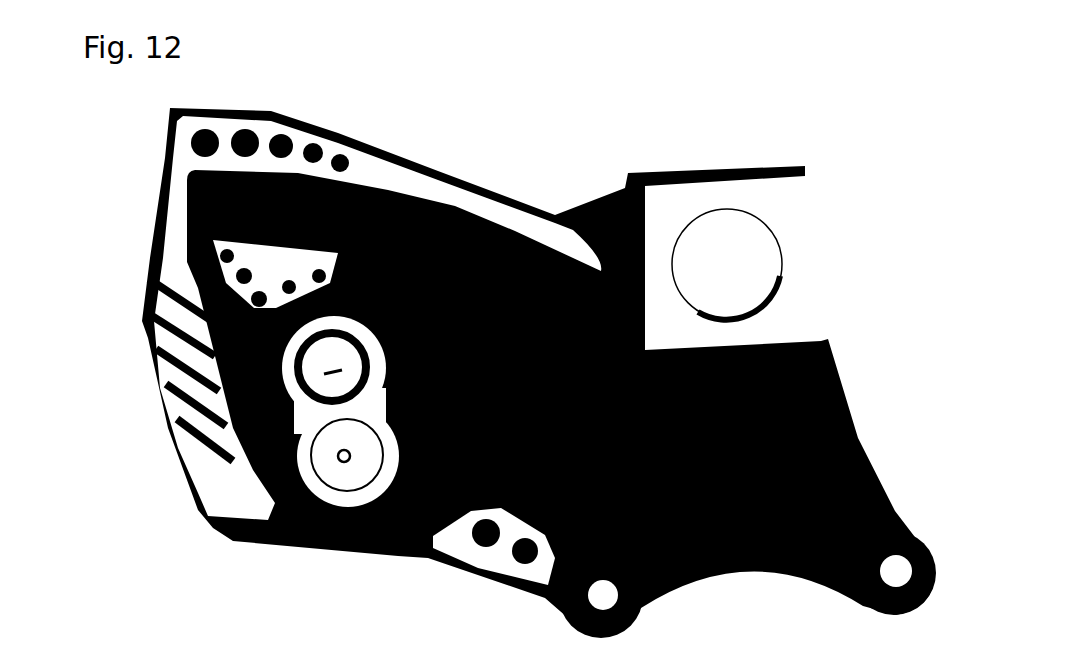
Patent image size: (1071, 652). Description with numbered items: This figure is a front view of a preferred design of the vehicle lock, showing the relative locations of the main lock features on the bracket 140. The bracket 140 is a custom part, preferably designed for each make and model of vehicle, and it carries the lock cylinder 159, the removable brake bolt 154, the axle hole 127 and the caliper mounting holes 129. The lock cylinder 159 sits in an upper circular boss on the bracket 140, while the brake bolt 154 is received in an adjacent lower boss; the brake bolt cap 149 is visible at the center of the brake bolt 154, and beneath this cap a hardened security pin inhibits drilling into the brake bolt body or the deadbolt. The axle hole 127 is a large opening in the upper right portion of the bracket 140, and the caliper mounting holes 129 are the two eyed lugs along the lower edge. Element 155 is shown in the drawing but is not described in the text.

The axle hole 127 is at (717, 255).
The bracket 140 is at (838, 390).
The caliper mounting holes 129 is at (847, 583).
The lock cylinder 159 is at (307, 368).
The brake bolt 154 is at (267, 490).
The lower circular boss 155 is at (333, 450).
The brake bolt cap 149 is at (343, 468).